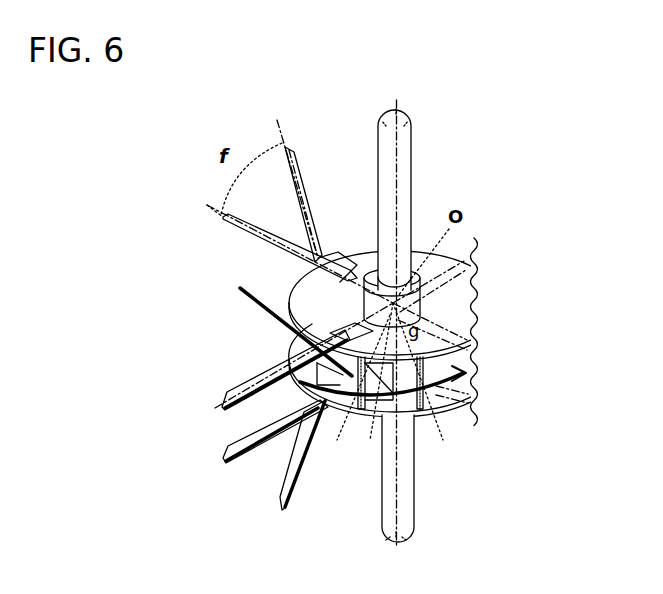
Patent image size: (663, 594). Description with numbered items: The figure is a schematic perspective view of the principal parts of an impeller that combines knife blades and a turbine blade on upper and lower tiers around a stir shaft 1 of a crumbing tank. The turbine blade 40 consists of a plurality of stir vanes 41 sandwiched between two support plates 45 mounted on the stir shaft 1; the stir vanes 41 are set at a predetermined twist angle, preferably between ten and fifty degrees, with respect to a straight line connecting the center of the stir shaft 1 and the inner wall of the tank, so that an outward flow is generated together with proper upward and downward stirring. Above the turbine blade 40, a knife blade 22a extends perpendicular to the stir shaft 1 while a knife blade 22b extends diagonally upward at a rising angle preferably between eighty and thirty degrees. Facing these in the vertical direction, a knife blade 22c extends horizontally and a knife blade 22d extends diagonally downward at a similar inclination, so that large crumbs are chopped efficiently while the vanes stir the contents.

The stir shaft 1 is at (401, 177).
The knife blade 22a is at (250, 233).
The knife blade 22b is at (300, 168).
The knife blade 22c is at (224, 470).
The knife blade 22d is at (278, 512).
The turbine blade 40 is at (532, 254).
The stir vanes 41 is at (372, 397).
The support plates 45 is at (364, 248).